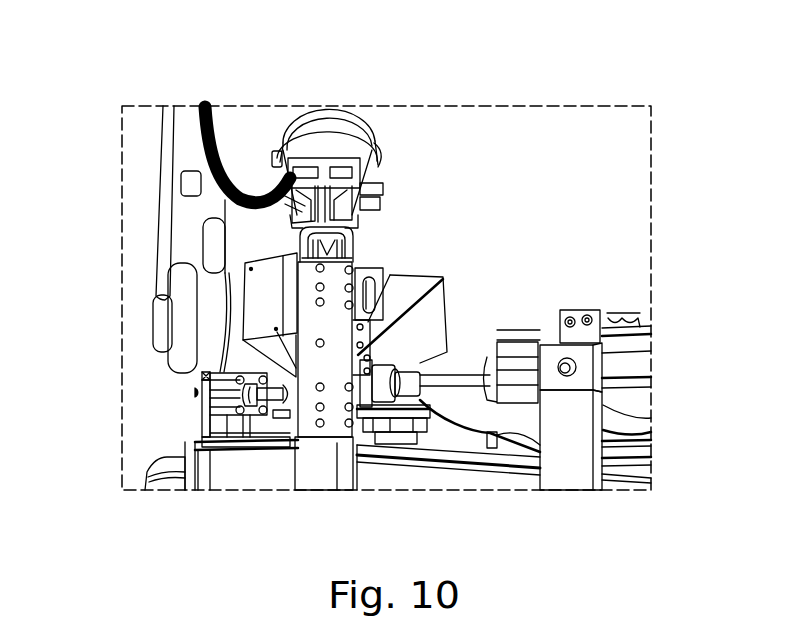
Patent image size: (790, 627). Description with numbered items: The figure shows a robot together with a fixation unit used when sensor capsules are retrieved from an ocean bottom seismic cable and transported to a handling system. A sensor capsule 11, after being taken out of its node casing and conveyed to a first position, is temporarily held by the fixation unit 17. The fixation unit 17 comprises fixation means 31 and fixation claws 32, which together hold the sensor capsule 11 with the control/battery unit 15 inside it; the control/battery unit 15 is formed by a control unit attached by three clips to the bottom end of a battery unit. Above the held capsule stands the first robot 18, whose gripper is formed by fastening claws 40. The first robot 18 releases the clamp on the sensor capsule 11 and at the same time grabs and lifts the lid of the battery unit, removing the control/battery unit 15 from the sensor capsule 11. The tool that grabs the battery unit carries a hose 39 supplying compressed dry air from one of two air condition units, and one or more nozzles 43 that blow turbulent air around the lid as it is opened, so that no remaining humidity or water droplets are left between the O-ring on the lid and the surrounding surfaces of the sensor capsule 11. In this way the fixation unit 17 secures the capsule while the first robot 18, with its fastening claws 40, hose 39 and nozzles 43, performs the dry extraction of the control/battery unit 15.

The sensor capsule 11 is at (302, 413).
The control/battery unit 15 is at (294, 248).
The fixation unit 17 is at (168, 223).
The first robot 18 is at (352, 134).
The fixation means 31 is at (465, 388).
The fixation claws 32 is at (244, 310).
The hose 39 is at (326, 138).
The fastening claws 40 is at (340, 203).
The nozzles 43 is at (373, 217).